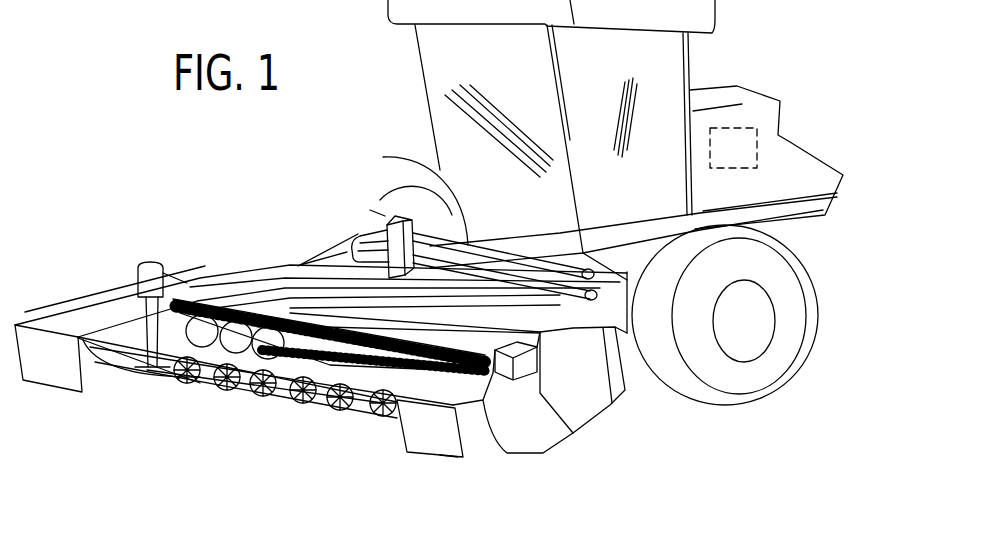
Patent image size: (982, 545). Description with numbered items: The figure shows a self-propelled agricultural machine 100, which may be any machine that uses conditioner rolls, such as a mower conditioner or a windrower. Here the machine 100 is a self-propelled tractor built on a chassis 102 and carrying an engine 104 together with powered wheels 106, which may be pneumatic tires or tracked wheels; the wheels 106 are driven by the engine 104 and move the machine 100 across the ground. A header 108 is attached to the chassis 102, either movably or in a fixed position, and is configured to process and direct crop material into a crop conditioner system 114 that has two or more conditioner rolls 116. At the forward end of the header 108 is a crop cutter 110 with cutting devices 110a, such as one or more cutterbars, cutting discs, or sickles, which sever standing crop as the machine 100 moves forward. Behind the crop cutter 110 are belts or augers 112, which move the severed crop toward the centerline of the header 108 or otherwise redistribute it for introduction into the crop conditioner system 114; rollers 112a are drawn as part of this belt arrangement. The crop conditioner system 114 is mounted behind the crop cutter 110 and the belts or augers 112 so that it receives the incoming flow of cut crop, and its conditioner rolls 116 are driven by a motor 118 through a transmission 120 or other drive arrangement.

The self-propelled agricultural machine 100 is at (716, 62).
The chassis 102 is at (757, 97).
The engine 104 is at (757, 150).
The powered wheels 106 is at (758, 382).
The header 108 is at (172, 260).
The crop cutter 110 is at (212, 420).
The cutting devices 110a is at (273, 396).
The belts or augers 112 is at (268, 306).
The conveyor rollers 112a is at (218, 308).
The crop conditioner system 114 is at (488, 234).
The conditioner rolls 116 is at (406, 194).
The motor 118 is at (347, 252).
The transmission 120 is at (385, 216).